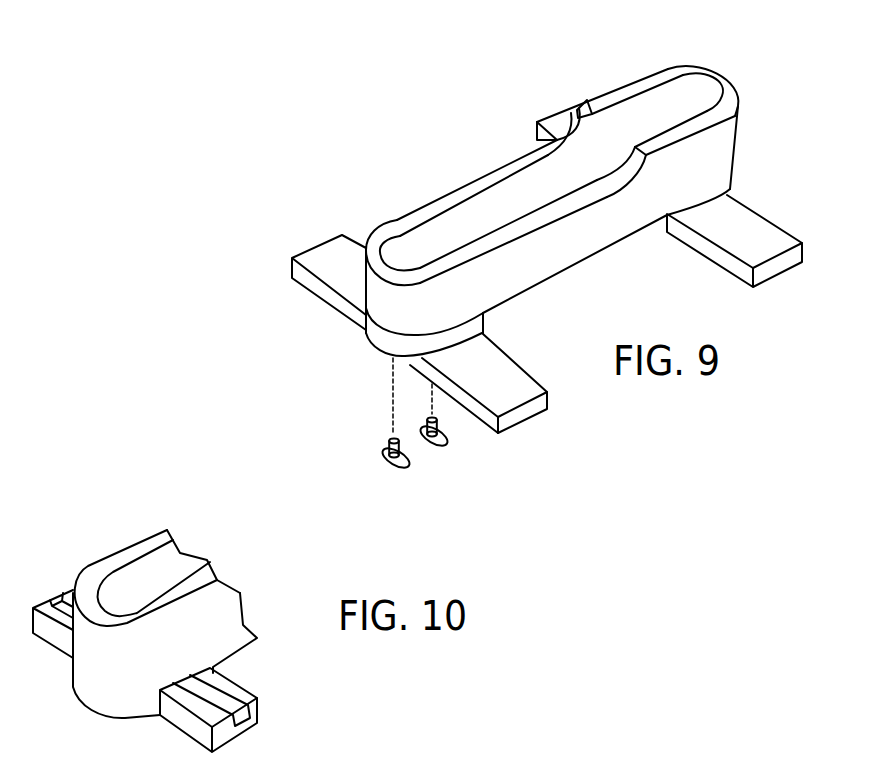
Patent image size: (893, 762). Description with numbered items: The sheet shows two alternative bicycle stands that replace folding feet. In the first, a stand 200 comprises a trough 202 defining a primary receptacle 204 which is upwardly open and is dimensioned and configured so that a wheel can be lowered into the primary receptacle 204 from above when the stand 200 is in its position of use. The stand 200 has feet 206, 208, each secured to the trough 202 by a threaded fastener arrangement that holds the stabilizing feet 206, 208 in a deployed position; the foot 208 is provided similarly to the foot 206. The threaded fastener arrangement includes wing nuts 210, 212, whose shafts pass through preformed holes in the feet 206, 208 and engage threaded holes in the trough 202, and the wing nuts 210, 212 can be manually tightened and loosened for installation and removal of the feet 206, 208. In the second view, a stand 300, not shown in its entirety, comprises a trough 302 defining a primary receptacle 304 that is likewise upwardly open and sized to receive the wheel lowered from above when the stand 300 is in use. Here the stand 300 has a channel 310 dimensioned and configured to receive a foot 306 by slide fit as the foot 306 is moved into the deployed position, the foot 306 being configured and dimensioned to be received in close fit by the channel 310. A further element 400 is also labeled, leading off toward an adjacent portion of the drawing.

In FIG. 9, the stand 200 is at (423, 64).
In FIG. 9, the trough 202 is at (727, 127).
In FIG. 9, the primary receptacle 204 is at (471, 163).
In FIG. 9, the foot 206 is at (528, 378).
In FIG. 9, the foot 208 is at (768, 217).
In FIG. 9, the wing nut 210 is at (380, 458).
In FIG. 9, the wing nut 212 is at (444, 444).
In FIG. 10, the stand 300 is at (277, 591).
In FIG. 10, the trough 302 is at (137, 541).
In FIG. 10, the primary receptacle 304 is at (175, 565).
In FIG. 10, the foot 306 is at (260, 713).
In FIG. 10, the channel 310 is at (108, 728).
In FIG. 10, the assembly 400 is at (807, 761).